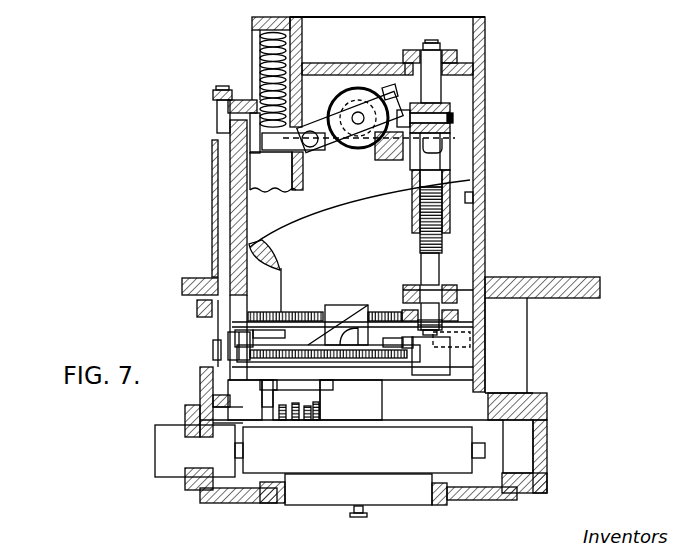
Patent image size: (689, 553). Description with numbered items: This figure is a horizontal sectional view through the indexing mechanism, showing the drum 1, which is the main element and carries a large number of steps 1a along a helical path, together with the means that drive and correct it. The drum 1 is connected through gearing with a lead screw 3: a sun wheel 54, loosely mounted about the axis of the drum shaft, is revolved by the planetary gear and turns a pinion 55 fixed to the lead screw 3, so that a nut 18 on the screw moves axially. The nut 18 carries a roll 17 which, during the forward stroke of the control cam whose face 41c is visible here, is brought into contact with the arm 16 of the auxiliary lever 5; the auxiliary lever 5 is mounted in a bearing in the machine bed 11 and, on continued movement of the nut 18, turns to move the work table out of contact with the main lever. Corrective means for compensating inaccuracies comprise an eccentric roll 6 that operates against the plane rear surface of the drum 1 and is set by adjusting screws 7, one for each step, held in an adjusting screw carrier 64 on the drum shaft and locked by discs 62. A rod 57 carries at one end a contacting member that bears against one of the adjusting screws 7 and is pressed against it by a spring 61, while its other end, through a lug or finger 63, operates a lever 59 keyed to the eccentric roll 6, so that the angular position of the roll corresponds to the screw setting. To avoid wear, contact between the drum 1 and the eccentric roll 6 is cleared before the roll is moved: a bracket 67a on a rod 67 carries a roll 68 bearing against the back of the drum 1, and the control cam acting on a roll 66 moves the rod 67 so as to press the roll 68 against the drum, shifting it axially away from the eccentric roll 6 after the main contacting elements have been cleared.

The drum 1 is at (333, 204).
The steps 1a is at (266, 244).
The lead screw 3 is at (443, 246).
The auxiliary lever 5 is at (386, 160).
The eccentric roll 6 is at (353, 98).
The adjusting screws 7 is at (303, 406).
The machine bed 11 is at (545, 407).
The arm of the auxiliary lever 16 is at (370, 111).
The roll 17 is at (393, 87).
The nut 18 is at (440, 150).
The cam-face 41c is at (348, 312).
The sun wheel 54 is at (306, 312).
The pinion 55 is at (459, 317).
The rod 57 is at (255, 152).
The lever 59 is at (341, 103).
The spring 61 is at (262, 62).
The discs 62 is at (385, 460).
The lug or finger 63 is at (313, 146).
The adjusting screw carrier 64 is at (332, 430).
The roll 66 is at (245, 348).
The rod 67 is at (226, 197).
The bracket 67a is at (258, 98).
The roll 68 is at (290, 136).